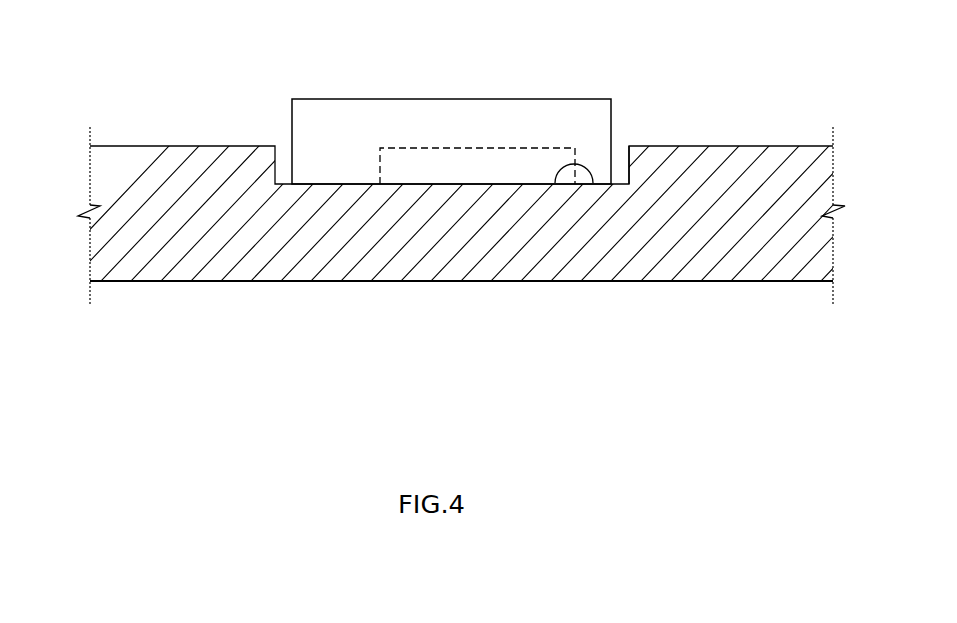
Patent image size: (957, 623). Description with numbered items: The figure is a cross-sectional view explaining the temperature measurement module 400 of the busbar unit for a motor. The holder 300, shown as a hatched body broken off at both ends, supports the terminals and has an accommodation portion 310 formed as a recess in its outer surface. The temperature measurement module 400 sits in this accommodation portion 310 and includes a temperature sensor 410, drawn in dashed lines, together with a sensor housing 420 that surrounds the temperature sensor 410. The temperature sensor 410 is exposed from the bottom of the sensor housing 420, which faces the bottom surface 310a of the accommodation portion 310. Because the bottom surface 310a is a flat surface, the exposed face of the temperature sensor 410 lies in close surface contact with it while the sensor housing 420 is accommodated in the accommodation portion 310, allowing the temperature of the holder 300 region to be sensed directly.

The holder 300 is at (302, 267).
The accommodation portion 310 is at (619, 168).
The bottom surface of the accommodation portion 310a is at (555, 183).
The temperature measurement module 400 is at (328, 90).
The temperature sensor 410 is at (500, 148).
The sensor housing 420 is at (410, 99).